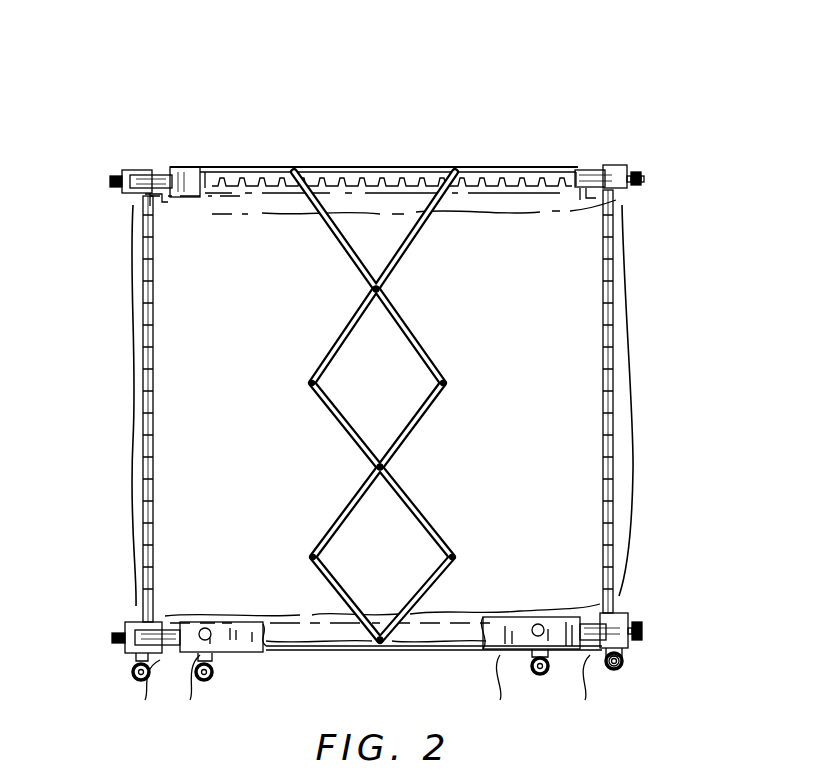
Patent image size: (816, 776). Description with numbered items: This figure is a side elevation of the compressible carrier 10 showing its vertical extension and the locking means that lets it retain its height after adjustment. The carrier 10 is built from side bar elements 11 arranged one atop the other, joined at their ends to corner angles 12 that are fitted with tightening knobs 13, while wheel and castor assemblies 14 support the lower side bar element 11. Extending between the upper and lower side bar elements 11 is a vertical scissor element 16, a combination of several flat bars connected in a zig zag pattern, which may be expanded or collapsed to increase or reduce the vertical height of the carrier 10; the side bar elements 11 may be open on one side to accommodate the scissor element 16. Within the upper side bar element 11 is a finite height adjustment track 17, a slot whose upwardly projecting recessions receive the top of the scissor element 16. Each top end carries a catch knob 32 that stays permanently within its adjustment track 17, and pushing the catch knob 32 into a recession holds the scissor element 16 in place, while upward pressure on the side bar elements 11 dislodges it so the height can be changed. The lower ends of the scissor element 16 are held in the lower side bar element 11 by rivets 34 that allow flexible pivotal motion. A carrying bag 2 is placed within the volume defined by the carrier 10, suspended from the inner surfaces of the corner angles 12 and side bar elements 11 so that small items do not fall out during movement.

The compressible carrier 10 is at (366, 55).
The carrying bag 2 is at (622, 318).
The side bar element 11 is at (128, 170).
The corner angle 12 is at (590, 165).
The tightening knob 13 is at (644, 170).
The wheel and castor assembly 14 is at (626, 664).
The vertical scissor element 16 is at (615, 368).
The finite height adjustment track 17 is at (510, 175).
The catch knob 32 is at (292, 170).
The rivet 34 is at (380, 642).